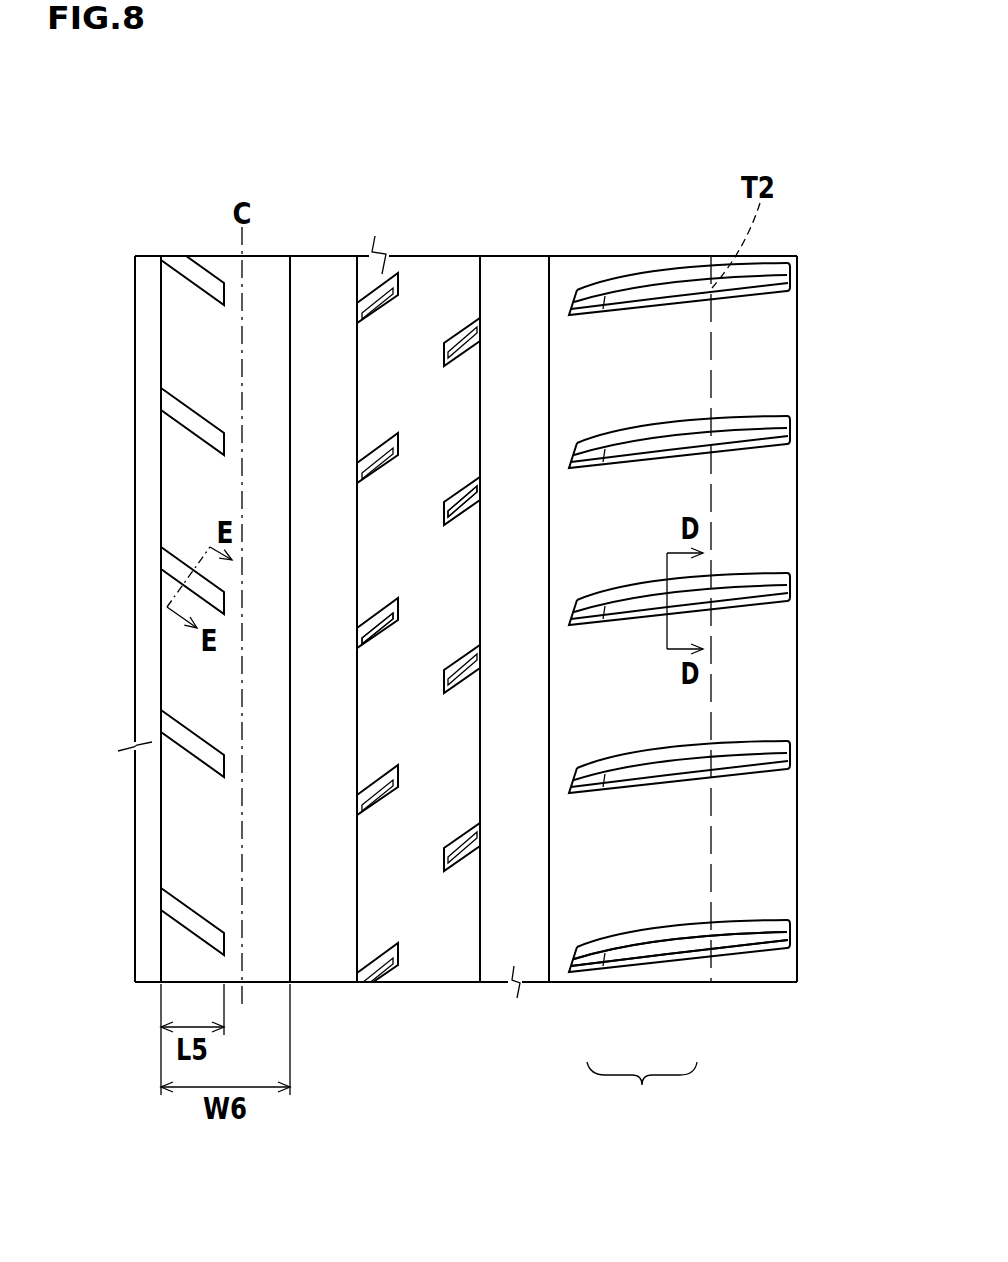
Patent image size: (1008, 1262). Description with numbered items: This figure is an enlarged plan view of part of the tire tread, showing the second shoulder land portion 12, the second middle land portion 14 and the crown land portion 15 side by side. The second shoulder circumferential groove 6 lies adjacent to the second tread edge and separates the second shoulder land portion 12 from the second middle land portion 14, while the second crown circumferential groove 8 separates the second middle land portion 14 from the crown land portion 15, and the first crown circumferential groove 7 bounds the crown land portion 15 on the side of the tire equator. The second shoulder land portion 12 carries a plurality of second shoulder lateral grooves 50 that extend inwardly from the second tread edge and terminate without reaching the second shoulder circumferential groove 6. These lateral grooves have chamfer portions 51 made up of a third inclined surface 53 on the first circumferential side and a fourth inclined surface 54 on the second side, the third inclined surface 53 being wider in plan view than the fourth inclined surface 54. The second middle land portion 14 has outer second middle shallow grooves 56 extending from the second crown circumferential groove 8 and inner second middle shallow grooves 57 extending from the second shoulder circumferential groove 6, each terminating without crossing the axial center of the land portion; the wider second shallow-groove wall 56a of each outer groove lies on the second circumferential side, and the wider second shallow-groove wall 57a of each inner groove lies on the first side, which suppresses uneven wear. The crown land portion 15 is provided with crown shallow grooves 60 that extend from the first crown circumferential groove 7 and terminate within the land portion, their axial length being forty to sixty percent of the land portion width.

The first crown circumferential groove 7 is at (148, 287).
The crown land portion 15 is at (205, 320).
The second crown circumferential groove 8 is at (322, 287).
The second middle land portion 14 is at (418, 310).
The second shoulder circumferential groove 6 is at (510, 287).
The second shoulder land portion 12 is at (617, 337).
The crown shallow grooves 60 is at (198, 425).
The second shallow-groove wall 57a is at (461, 495).
The second shallow-groove wall 56a is at (382, 622).
The second shoulder lateral grooves 50 is at (662, 450).
The outer second middle shallow grooves 56 is at (375, 793).
The inner second middle shallow grooves 57 is at (462, 852).
The third inclined surface 53 is at (630, 938).
The fourth inclined surface 54 is at (683, 963).
The chamfer portions 51 is at (642, 1094).